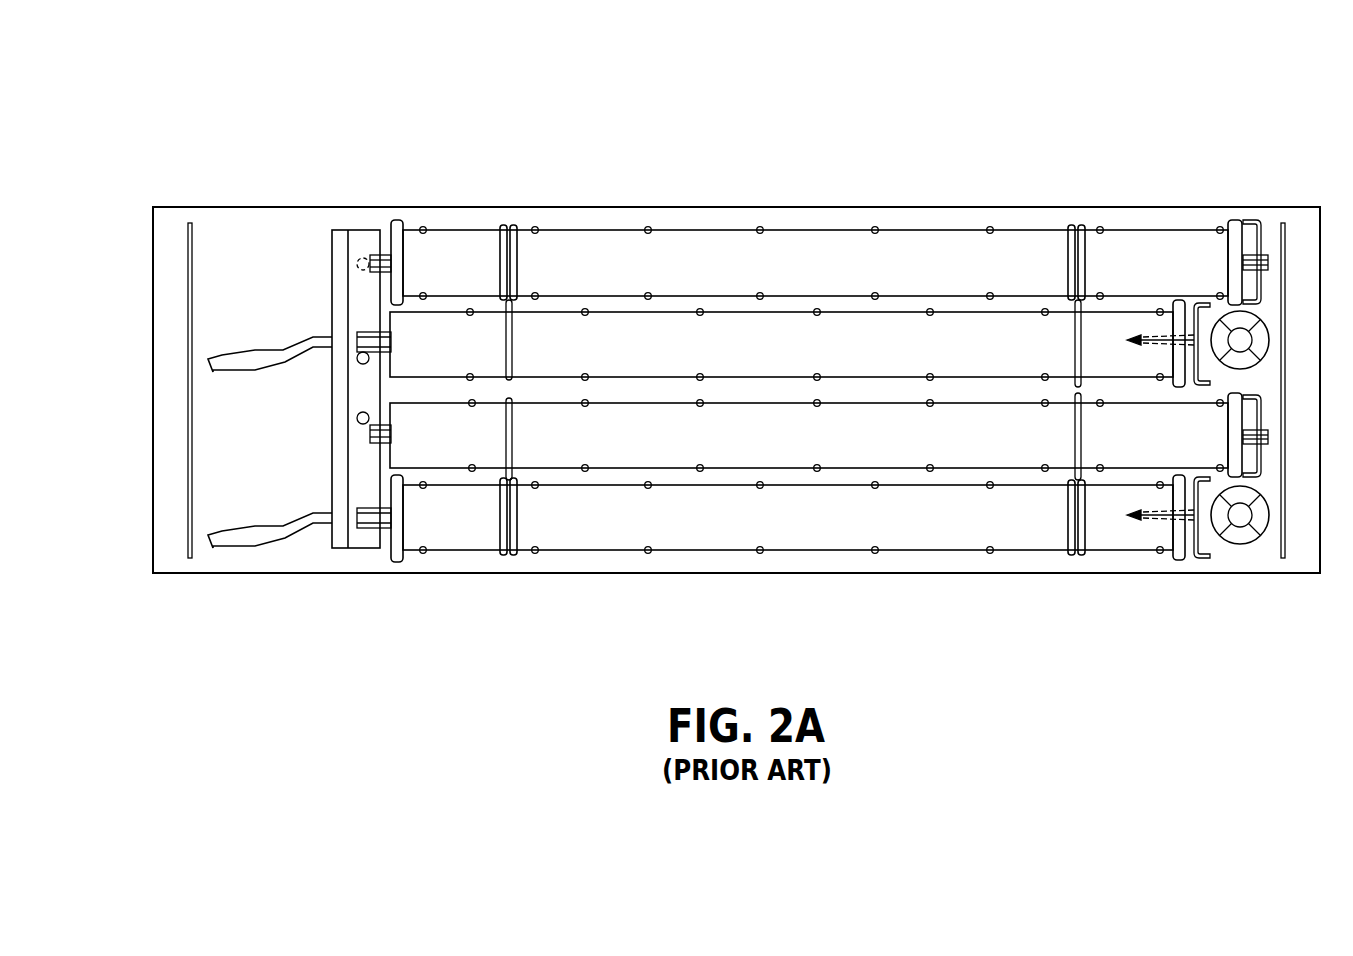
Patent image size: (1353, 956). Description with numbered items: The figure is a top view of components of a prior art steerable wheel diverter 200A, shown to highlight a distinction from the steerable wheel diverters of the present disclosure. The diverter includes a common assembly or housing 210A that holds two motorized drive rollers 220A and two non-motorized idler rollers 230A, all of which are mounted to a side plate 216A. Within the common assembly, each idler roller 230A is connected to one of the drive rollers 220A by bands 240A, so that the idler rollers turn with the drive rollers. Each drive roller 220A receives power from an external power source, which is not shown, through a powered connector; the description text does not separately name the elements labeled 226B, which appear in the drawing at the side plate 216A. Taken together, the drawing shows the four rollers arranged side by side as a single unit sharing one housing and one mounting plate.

The steerable wheel diverter 200A is at (802, 113).
The common assembly 210A is at (390, 207).
The side plate 216A is at (342, 542).
The drive rollers 220A is at (1002, 335).
The hose 226B is at (265, 352).
The idler rollers 230A is at (900, 255).
The bands 240A is at (510, 227).